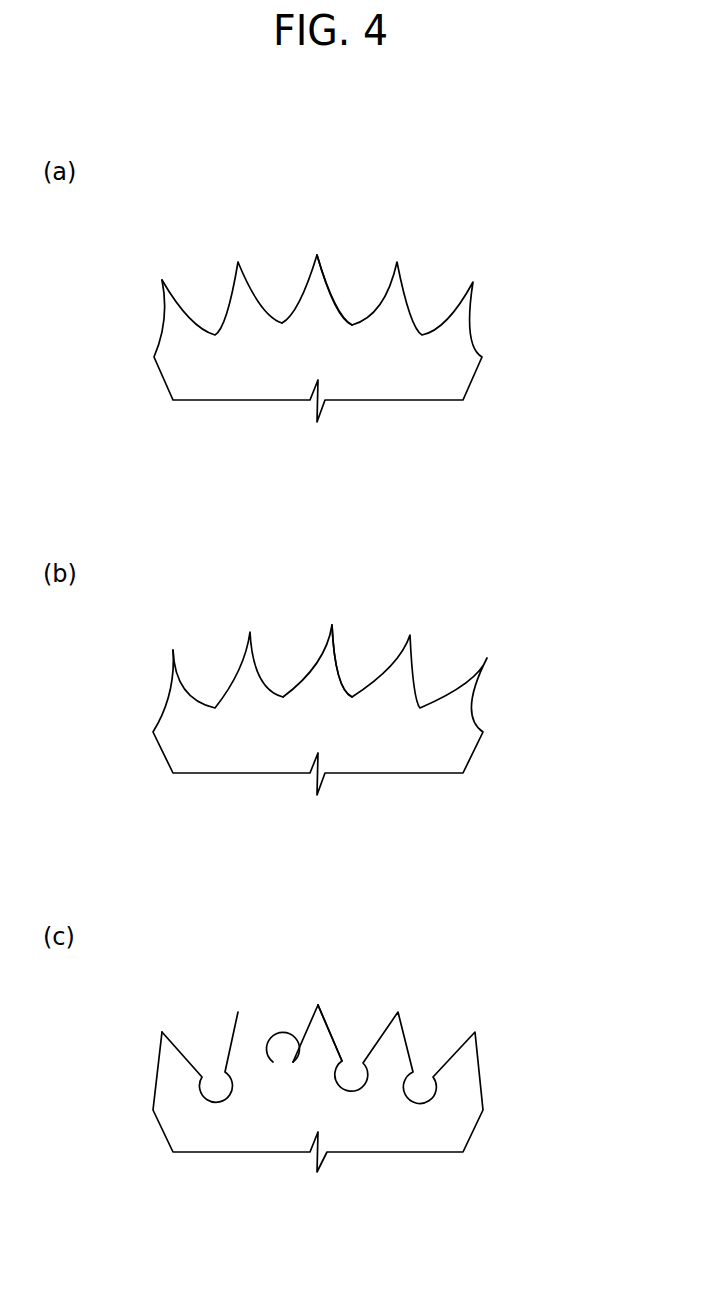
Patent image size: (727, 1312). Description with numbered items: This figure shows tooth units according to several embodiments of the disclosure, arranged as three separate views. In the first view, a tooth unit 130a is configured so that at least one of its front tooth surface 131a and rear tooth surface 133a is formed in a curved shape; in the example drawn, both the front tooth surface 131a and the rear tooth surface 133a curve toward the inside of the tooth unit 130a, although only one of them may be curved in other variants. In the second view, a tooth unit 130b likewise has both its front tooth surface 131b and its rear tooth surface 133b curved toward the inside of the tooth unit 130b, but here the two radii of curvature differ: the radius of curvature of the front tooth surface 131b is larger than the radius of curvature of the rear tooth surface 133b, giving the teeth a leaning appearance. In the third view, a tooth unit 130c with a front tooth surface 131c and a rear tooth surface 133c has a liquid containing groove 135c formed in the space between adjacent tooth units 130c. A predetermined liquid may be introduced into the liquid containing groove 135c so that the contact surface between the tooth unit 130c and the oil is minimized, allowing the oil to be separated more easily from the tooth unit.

The tooth unit 130a is at (500, 289).
The front tooth surface 131a is at (307, 293).
The rear tooth surface 133a is at (327, 292).
The tooth unit 130b is at (515, 670).
The front tooth surface 131b is at (312, 662).
The rear tooth surface 133b is at (330, 662).
The tooth unit 130c is at (507, 1049).
The front tooth surface 131c is at (305, 1032).
The rear tooth surface 133c is at (332, 1032).
The liquid containing groove 135c is at (290, 1076).